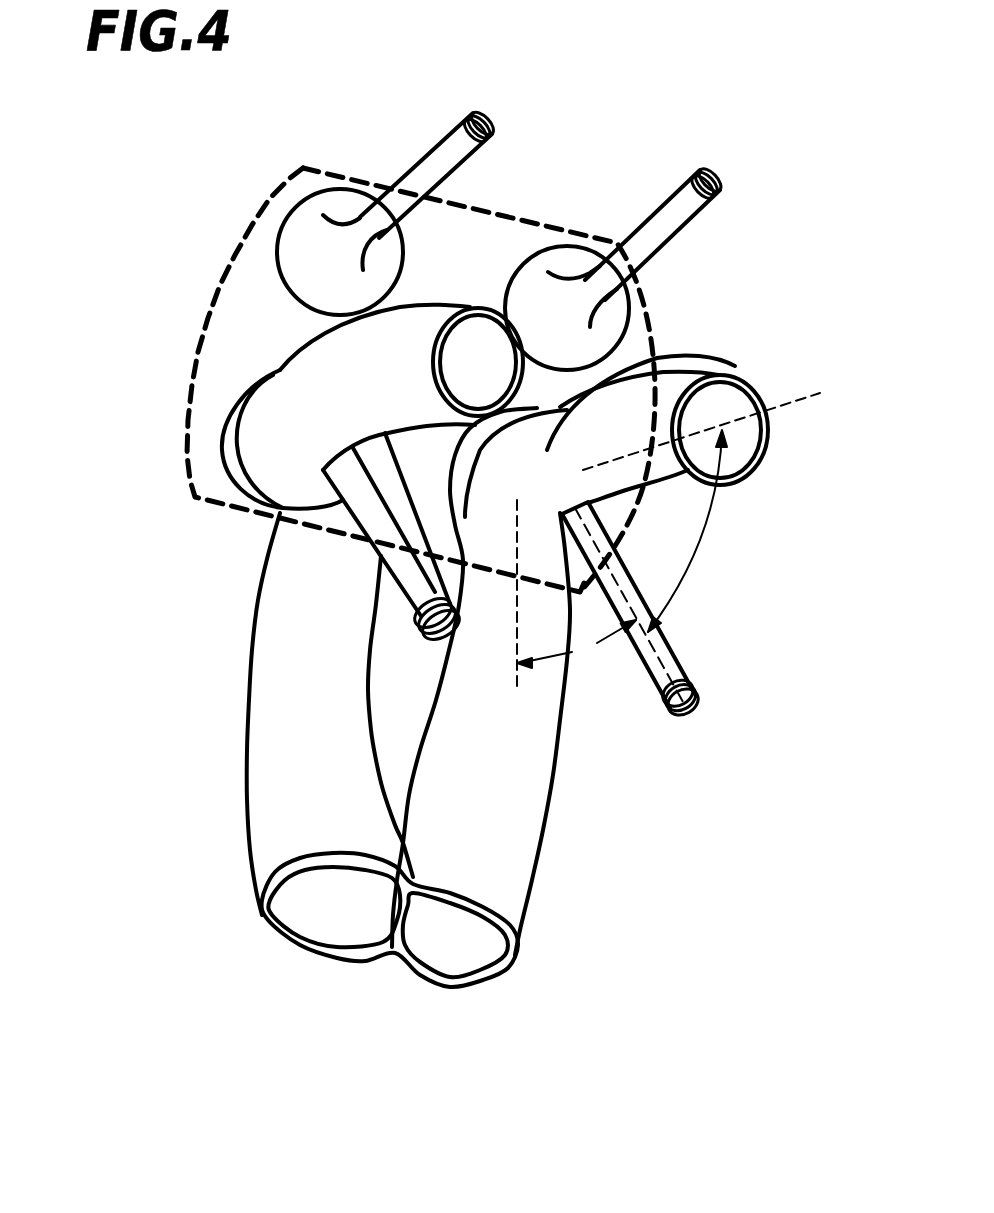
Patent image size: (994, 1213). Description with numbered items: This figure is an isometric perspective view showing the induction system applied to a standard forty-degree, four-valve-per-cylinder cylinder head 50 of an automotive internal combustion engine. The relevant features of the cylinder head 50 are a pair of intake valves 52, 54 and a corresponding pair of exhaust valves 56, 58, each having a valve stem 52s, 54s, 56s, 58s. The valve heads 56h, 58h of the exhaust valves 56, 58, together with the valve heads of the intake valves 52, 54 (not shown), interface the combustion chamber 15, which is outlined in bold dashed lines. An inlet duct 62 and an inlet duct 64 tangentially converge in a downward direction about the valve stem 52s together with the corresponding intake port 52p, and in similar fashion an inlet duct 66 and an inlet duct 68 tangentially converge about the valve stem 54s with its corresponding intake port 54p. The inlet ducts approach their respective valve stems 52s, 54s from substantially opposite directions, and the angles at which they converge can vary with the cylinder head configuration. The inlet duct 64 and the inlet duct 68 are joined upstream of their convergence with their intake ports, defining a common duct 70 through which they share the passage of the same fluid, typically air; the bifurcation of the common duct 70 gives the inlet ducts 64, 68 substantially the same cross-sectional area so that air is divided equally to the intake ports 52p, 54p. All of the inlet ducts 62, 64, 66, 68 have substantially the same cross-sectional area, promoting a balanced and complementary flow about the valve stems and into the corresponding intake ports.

The combustion chamber 15 is at (240, 234).
The cylinder head 50 is at (198, 142).
The intake valve 52 is at (680, 651).
The intake port 52p is at (640, 366).
The valve stem 52s is at (645, 600).
The intake valve 54 is at (299, 674).
The intake port 54p is at (230, 418).
The valve stem 54s is at (378, 556).
The exhaust valve 56 is at (697, 198).
The valve head 56h is at (613, 310).
The valve stem 56s is at (683, 213).
The exhaust valve 58 is at (471, 151).
The valve head 58h is at (300, 213).
The valve stem 58s is at (437, 152).
The inlet duct 62 is at (668, 483).
The inlet duct 64 is at (537, 750).
The inlet duct 66 is at (330, 358).
The inlet duct 68 is at (290, 772).
The common duct 70 is at (331, 962).